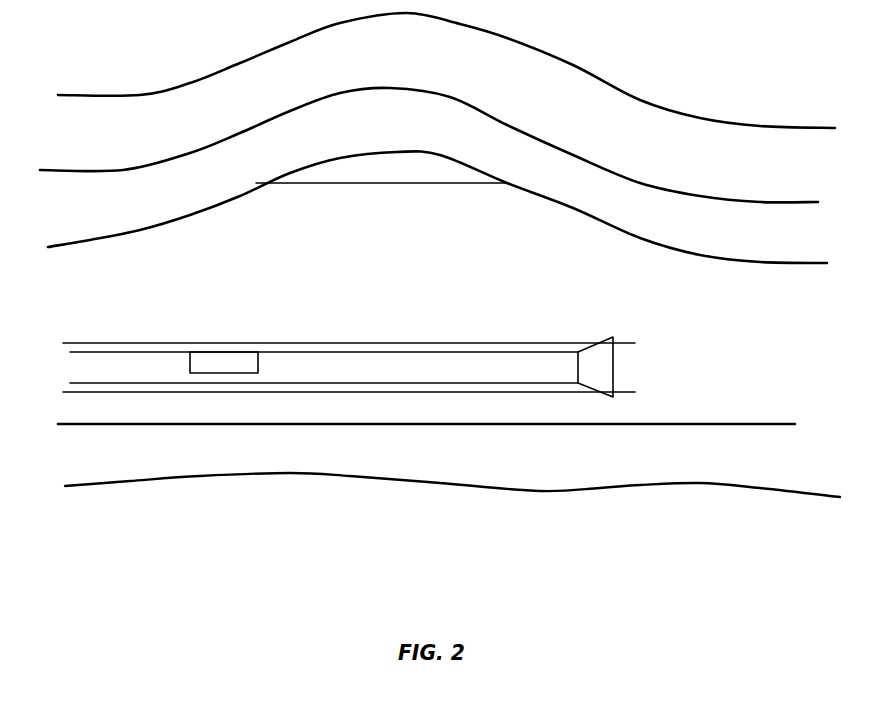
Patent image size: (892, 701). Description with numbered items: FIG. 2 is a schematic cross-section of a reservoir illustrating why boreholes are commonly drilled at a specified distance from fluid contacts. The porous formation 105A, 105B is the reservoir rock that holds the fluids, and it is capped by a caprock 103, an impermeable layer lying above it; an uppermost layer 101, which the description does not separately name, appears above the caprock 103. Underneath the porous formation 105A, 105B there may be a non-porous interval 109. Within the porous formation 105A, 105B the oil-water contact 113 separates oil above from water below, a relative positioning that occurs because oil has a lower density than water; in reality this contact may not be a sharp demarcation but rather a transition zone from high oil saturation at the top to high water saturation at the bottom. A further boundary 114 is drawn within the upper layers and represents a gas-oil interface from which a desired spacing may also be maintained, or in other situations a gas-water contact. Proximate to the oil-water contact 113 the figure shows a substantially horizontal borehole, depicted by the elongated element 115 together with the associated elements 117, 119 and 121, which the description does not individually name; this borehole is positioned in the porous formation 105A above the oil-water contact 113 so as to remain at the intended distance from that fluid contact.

The upper layer / top formation boundary 101 is at (767, 174).
The caprock 103 is at (767, 244).
The porous formation 105A is at (780, 344).
The porous formation 105B is at (780, 466).
The non-porous interval 109 is at (767, 532).
The oil-water contact 113 is at (710, 423).
The gas-oil interface 114 is at (419, 187).
The wellbore / casing 115 is at (430, 343).
The drill bit / tool head 117 is at (613, 372).
The sensor / tool component 119 is at (207, 370).
The drill string / inner tubing 121 is at (320, 350).